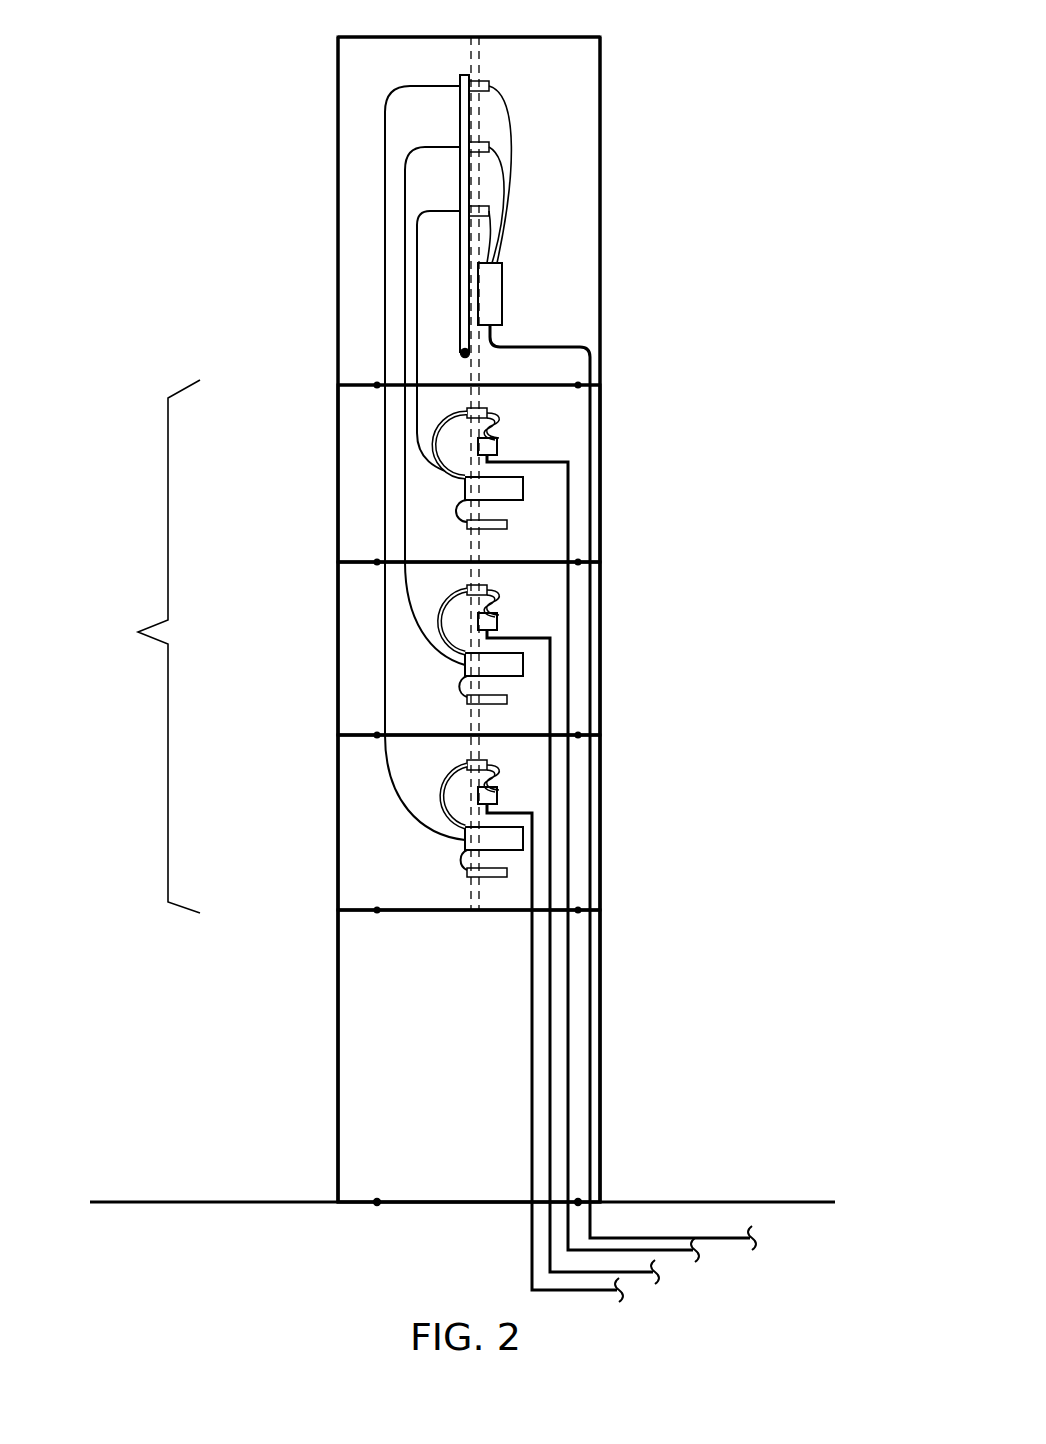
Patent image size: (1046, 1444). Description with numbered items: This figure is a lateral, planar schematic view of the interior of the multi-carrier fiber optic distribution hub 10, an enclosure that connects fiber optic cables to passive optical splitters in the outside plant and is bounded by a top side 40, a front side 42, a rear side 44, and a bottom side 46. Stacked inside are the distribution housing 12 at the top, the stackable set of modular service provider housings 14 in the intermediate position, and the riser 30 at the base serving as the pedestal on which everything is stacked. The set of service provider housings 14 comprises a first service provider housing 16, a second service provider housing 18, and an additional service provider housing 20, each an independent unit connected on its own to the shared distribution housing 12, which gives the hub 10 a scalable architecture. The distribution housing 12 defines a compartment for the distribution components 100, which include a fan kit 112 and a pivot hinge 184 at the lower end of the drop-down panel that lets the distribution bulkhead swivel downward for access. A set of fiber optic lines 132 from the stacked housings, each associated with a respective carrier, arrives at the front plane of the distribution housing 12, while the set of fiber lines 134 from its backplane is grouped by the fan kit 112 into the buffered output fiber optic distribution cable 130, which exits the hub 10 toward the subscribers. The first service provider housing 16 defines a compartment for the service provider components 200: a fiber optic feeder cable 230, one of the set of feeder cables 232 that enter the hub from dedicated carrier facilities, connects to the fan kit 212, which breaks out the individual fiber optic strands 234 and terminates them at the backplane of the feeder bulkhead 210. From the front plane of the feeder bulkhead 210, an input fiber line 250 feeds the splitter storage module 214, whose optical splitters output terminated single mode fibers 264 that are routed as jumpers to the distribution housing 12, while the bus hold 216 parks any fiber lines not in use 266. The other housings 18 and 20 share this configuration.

The multi-carrier fiber optic distribution hub 10 is at (207, 100).
The distribution housing 12 is at (335, 87).
The stackable set of modular service provider housings 14 is at (153, 646).
The first service provider housing 16 is at (333, 492).
The second service provider housing 18 is at (330, 652).
The additional service provider housing 20 is at (330, 840).
The riser 30 is at (330, 1033).
The top side 40 is at (600, 37).
The front side 42 is at (338, 60).
The rear side 44 is at (602, 82).
The bottom side 46 is at (440, 1205).
The distribution components 100 is at (358, 127).
The fan kit 112 is at (504, 290).
The output fiber optic distribution cable 130 is at (580, 345).
The set of fiber optic lines 132 is at (417, 226).
The set of fiber lines 134 is at (497, 220).
The pivot hinge 184 is at (462, 352).
The service provider components 200 is at (485, 804).
The feeder bulkhead 210 is at (496, 410).
The fan kit 212 is at (505, 447).
The splitter storage module 214 is at (530, 485).
The bus hold 216 is at (513, 525).
The fiber optic feeder cable 230 is at (568, 500).
The set of feeder cables 232 is at (531, 1100).
The individual fiber optic strands 234 is at (508, 425).
The input fiber line 250 is at (430, 458).
The single mode fibers 264 is at (417, 263).
The fiber lines not in use 266 is at (440, 508).